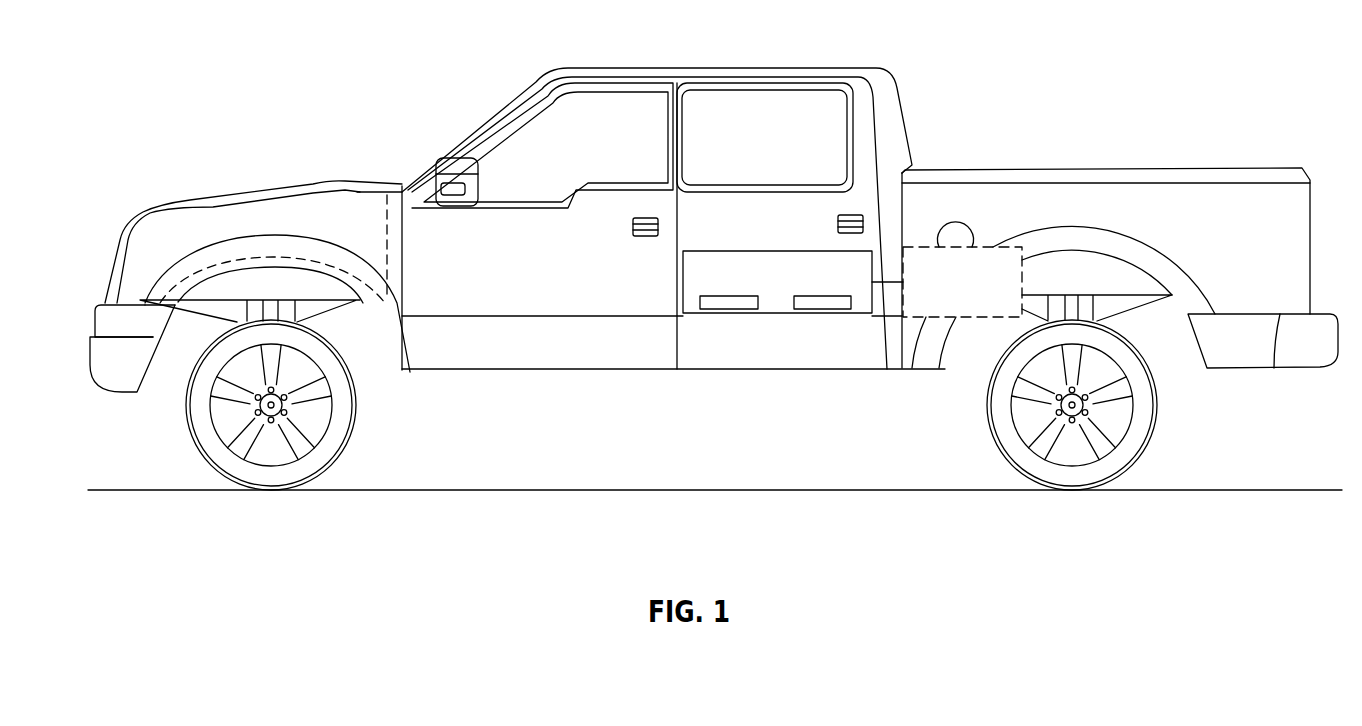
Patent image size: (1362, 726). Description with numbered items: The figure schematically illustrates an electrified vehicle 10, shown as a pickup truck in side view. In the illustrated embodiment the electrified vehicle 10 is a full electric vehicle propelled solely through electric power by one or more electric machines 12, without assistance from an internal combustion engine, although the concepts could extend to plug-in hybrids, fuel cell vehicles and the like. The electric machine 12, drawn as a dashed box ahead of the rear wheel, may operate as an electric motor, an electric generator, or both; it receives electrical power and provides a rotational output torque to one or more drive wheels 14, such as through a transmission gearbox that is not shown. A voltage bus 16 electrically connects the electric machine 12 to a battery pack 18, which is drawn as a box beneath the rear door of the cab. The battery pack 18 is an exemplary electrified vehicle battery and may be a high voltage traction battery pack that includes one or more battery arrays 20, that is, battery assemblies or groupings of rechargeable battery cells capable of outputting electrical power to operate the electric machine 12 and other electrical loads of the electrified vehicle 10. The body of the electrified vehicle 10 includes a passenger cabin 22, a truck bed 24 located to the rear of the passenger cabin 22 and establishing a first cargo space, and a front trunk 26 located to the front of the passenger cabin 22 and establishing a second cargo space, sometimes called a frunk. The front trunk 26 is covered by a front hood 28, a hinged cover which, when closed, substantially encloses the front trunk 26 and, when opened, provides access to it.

The electrified vehicle 10 is at (718, 48).
The electric machine 12 is at (974, 246).
The drive wheels 14 is at (240, 472).
The voltage bus 16 is at (892, 283).
The battery pack 18 is at (778, 248).
The battery arrays 20 is at (730, 309).
The passenger cabin 22 is at (584, 132).
The truck bed 24 is at (1088, 166).
The front trunk 26 is at (353, 212).
The front hood 28 is at (220, 200).